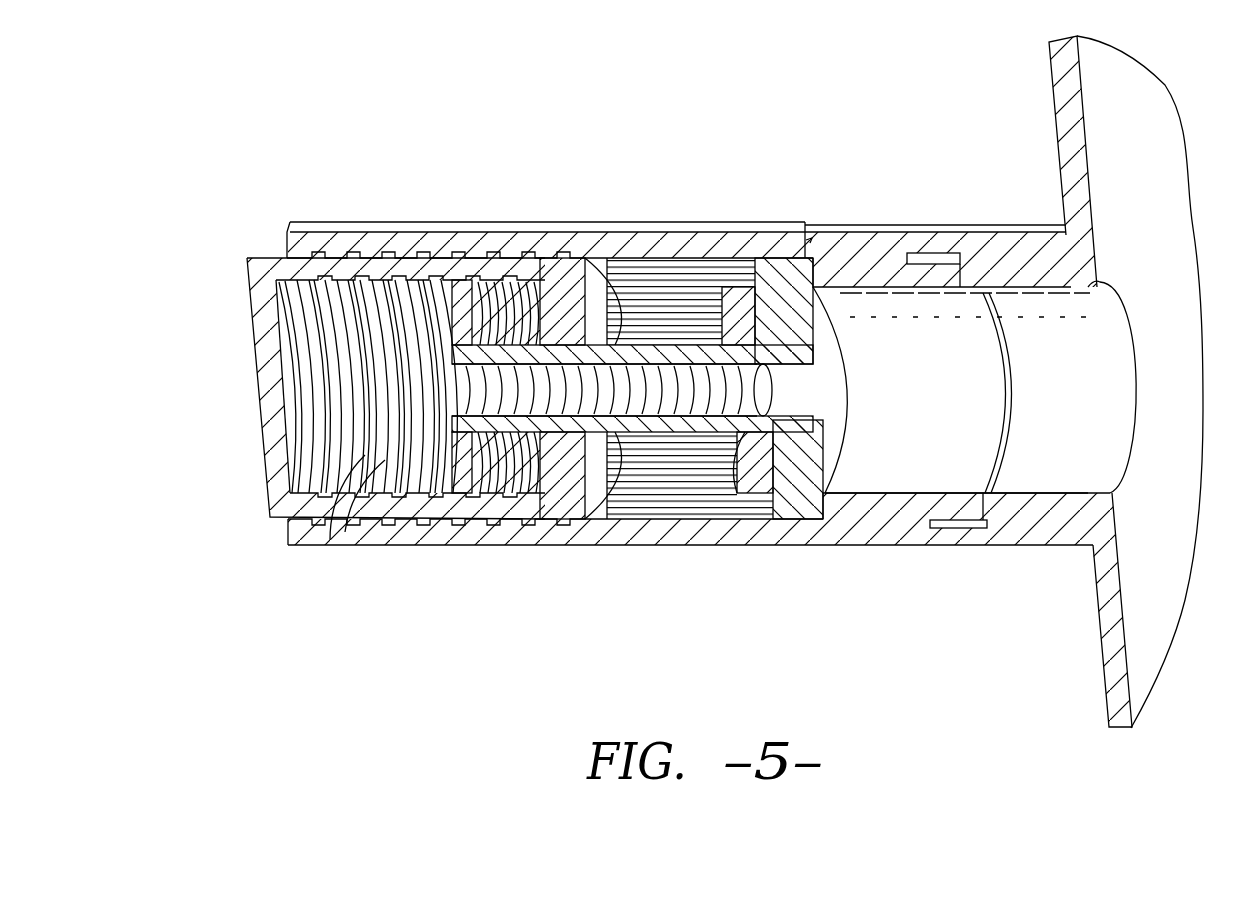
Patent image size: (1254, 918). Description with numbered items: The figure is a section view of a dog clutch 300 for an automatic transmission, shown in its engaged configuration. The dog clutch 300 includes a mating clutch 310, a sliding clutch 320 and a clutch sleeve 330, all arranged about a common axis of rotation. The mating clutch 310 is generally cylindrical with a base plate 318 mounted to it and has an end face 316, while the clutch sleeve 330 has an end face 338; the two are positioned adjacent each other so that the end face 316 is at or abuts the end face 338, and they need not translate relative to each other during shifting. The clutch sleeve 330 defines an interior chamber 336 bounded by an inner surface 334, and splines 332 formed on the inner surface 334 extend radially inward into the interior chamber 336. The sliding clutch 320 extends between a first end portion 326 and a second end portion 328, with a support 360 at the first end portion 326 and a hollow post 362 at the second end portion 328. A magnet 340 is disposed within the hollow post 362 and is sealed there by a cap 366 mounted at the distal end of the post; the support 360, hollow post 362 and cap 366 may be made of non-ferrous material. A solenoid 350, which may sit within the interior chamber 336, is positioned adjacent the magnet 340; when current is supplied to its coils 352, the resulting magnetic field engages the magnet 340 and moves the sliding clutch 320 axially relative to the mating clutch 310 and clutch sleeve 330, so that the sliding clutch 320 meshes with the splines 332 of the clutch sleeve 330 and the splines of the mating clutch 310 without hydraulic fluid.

The dog clutch 300 is at (577, 170).
The mating clutch 310 is at (1066, 470).
The end face 316 is at (834, 533).
The base plate 318 is at (1140, 135).
The sliding clutch 320 is at (833, 428).
The first end portion 326 is at (988, 510).
The second end portion 328 is at (468, 342).
The clutch sleeve 330 is at (576, 258).
The splines 332 is at (712, 488).
The inner surface 334 is at (765, 432).
The interior chamber 336 is at (693, 303).
The end face 338 is at (808, 242).
The magnet 340 is at (770, 389).
The solenoid 350 is at (264, 385).
The coils 352 is at (345, 452).
The support 360 is at (900, 268).
The hollow post 362 is at (503, 505).
The cap 366 is at (414, 502).